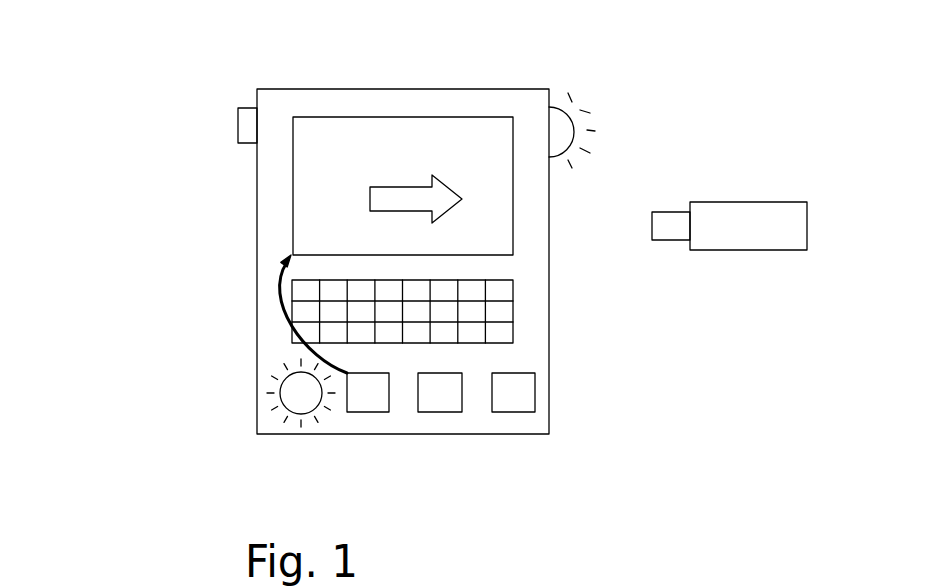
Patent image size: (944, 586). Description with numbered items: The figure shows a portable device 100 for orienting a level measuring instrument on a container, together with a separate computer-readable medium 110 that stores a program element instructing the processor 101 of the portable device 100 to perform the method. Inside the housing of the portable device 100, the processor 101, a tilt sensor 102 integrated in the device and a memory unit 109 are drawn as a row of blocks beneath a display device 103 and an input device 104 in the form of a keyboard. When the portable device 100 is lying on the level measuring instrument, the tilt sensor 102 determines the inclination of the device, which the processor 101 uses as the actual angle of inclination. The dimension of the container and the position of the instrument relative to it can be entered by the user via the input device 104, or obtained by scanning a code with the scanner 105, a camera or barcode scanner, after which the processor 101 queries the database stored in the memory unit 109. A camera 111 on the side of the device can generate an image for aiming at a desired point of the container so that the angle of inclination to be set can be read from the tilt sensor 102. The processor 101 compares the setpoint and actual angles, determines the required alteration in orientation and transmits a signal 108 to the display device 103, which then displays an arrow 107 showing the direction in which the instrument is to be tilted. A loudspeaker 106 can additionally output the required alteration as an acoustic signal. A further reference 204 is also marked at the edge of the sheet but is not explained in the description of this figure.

The portable device 100 is at (176, 163).
The processor 101 is at (362, 403).
The tilt sensor 102 is at (441, 403).
The display device 103 is at (328, 137).
The input device 104 is at (502, 313).
The scanner 105 is at (575, 123).
The loudspeaker 106 is at (301, 395).
The arrow 107 is at (415, 183).
The signal 108 is at (277, 320).
The memory unit 109 is at (514, 403).
The computer-readable medium 110 is at (753, 202).
The camera 111 is at (245, 128).
The element 204 is at (537, 585).